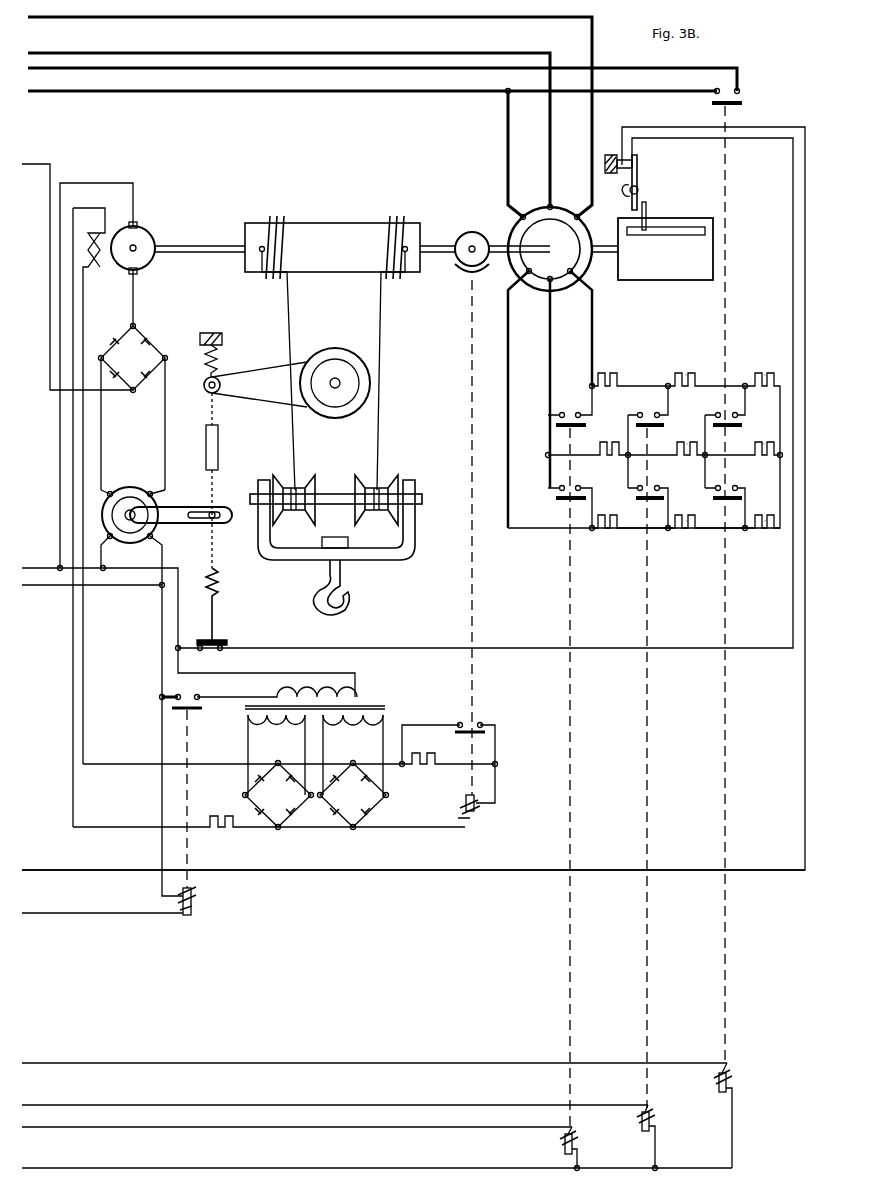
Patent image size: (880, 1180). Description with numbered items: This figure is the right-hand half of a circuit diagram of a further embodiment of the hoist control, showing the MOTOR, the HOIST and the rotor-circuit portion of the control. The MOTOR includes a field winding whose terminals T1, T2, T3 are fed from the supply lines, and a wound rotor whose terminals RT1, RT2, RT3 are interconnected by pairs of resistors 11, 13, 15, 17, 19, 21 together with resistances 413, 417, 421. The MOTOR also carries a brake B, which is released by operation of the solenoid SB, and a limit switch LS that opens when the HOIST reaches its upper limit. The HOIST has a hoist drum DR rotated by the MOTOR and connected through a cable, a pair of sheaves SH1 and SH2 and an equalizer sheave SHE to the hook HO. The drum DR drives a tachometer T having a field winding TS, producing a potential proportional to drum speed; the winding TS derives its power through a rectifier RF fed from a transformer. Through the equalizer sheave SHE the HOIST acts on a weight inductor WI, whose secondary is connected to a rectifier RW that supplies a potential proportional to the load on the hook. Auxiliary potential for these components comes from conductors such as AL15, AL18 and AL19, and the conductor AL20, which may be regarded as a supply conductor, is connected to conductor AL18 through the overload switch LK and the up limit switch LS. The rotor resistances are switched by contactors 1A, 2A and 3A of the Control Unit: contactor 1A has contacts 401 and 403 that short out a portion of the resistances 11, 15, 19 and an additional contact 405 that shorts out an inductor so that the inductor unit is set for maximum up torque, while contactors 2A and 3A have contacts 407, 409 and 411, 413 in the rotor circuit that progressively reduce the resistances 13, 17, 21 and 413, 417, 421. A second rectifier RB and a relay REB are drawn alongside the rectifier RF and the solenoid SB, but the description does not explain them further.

The contact 405 is at (742, 97).
The limit switch LS is at (638, 164).
The Motor MOTOR is at (514, 235).
The field winding terminal T1 is at (580, 214).
The field winding terminal T2 is at (520, 218).
The field winding terminal T3 is at (548, 207).
The rotor terminal RT1 is at (578, 274).
The rotor terminal RT2 is at (528, 288).
The rotor terminal RT3 is at (560, 282).
The brake B is at (471, 228).
The tachometer T is at (145, 226).
The field winding TS is at (93, 268).
The hoist drum DR is at (345, 223).
The rectifier RW is at (146, 365).
The weight inductor WI is at (135, 490).
The overload limit switch LK is at (222, 637).
The equalizer sheave SHE is at (358, 358).
The Hoist HOIST is at (344, 475).
The sheave SH1 is at (318, 482).
The sheave SH2 is at (392, 474).
The hook HO is at (313, 588).
The auxiliary conductor AL19 is at (95, 588).
The auxiliary conductor AL18 is at (178, 626).
The supply conductor AL20 is at (50, 867).
The supply conductor AL15 is at (105, 1168).
The rectifier RF is at (289, 803).
The rectifier back RB is at (364, 803).
The solenoid SB is at (478, 822).
The relay REB is at (193, 903).
The contact and resistance 413 is at (603, 371).
The resistor 13 is at (683, 371).
The resistor 11 is at (760, 371).
The contact 407 is at (652, 404).
The contact 401 is at (718, 410).
The resistor 17 is at (683, 440).
The resistor 15 is at (757, 440).
The resistance 417 is at (606, 461).
The contact 409 is at (655, 484).
The contact 403 is at (730, 484).
The contact 411 is at (553, 489).
The resistance 421 is at (608, 530).
The resistor 21 is at (686, 530).
The resistor 19 is at (762, 530).
The contactor 1A is at (730, 1070).
The contactor 2A is at (652, 1114).
The contactor 3A is at (575, 1138).